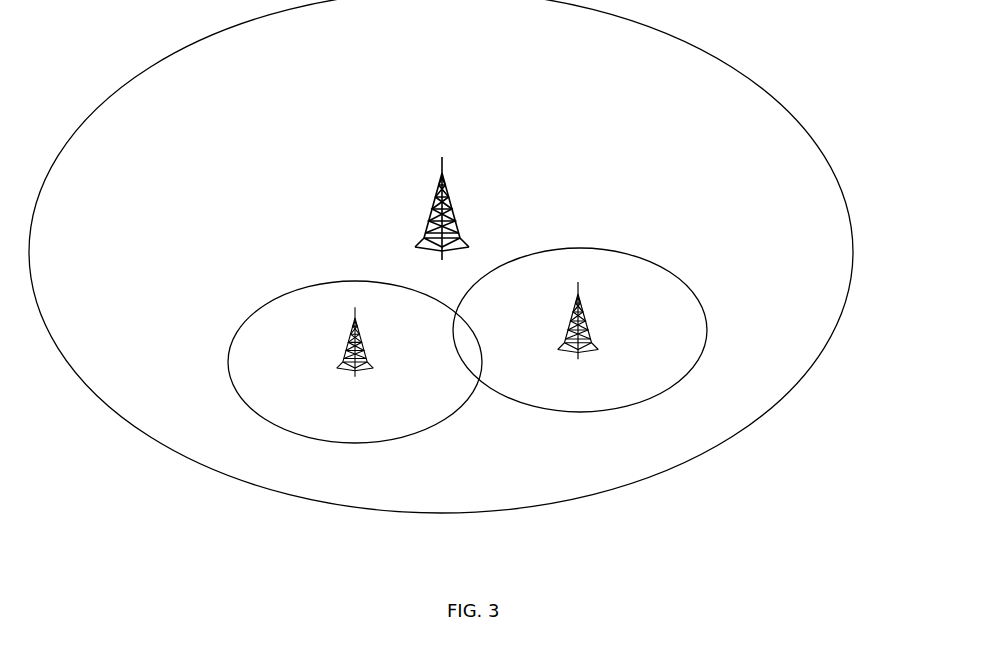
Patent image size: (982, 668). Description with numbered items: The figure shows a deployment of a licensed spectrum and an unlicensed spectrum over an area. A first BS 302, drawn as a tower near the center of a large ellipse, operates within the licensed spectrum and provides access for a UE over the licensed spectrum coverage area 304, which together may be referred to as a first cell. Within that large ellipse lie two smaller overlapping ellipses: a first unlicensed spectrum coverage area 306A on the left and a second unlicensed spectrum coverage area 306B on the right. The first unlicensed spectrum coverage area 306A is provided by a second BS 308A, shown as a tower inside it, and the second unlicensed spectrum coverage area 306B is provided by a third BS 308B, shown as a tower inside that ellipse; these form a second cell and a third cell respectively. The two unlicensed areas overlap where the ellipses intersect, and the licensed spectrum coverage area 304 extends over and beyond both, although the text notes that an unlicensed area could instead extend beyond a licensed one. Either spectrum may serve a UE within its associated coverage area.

The first BS 302 is at (433, 188).
The licensed spectrum coverage area 304 is at (603, 176).
The first unlicensed spectrum coverage area 306A is at (404, 413).
The second unlicensed spectrum coverage area 306B is at (657, 371).
The second BS 308A is at (350, 332).
The third BS 308B is at (580, 296).